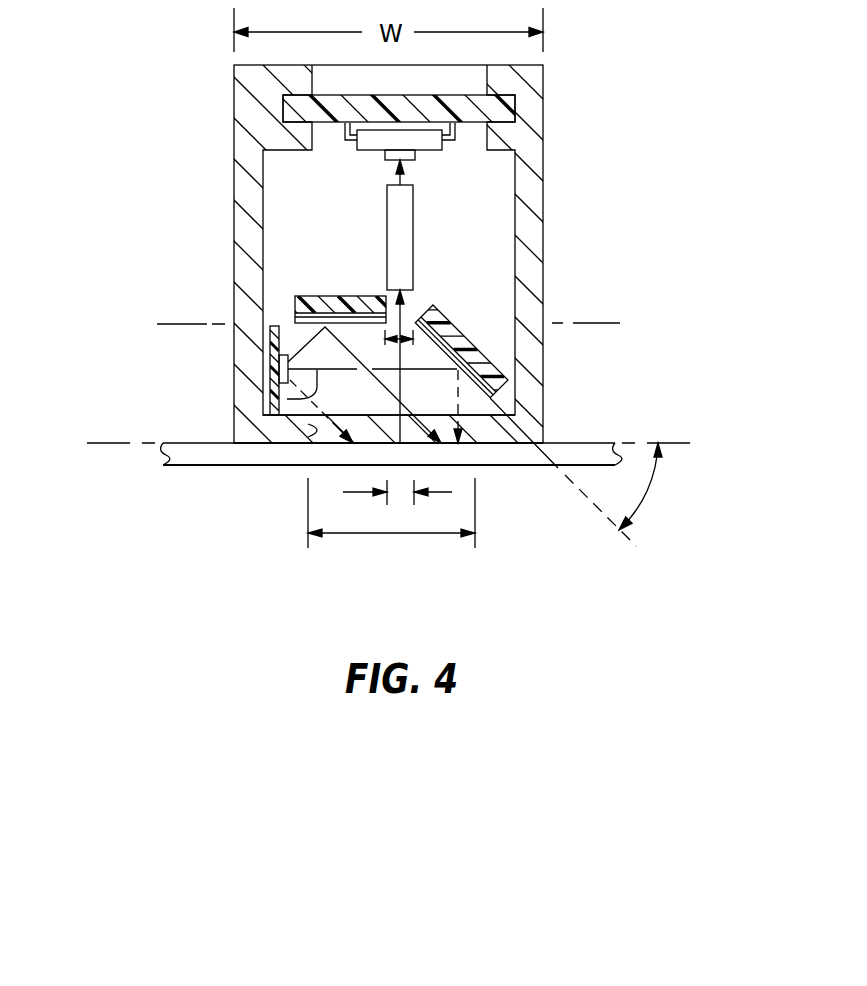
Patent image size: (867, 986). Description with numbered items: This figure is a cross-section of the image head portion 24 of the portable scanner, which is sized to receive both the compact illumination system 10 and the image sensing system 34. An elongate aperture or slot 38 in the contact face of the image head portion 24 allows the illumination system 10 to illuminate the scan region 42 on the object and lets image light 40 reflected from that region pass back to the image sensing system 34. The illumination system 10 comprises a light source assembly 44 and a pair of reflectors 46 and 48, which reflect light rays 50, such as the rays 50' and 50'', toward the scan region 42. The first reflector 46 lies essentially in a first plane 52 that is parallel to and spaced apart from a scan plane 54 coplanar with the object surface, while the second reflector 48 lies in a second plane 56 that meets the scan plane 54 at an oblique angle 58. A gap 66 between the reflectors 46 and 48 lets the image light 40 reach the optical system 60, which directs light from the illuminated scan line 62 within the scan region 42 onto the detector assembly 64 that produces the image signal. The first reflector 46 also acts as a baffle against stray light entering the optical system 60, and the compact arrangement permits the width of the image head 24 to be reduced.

The compact illumination system 10 is at (146, 52).
The image head portion 24 is at (548, 107).
The image sensing system 34 is at (305, 172).
The aperture or slot 38 is at (310, 442).
The image light 40 is at (402, 317).
The scan region 42 is at (390, 538).
The light source assembly 44 is at (273, 326).
The first reflector 46 is at (320, 296).
The second reflector 48 is at (500, 367).
The light rays 50 is at (291, 452).
The light ray 50' is at (307, 366).
The light ray 50'' is at (251, 406).
The first plane 52 is at (163, 324).
The scan plane 54 is at (678, 443).
The second plane 56 is at (627, 541).
The oblique angle 58 is at (648, 490).
The optical system 60 is at (418, 238).
The scan line 62 is at (445, 492).
The detector assembly 64 is at (428, 150).
The gap 66 is at (400, 345).